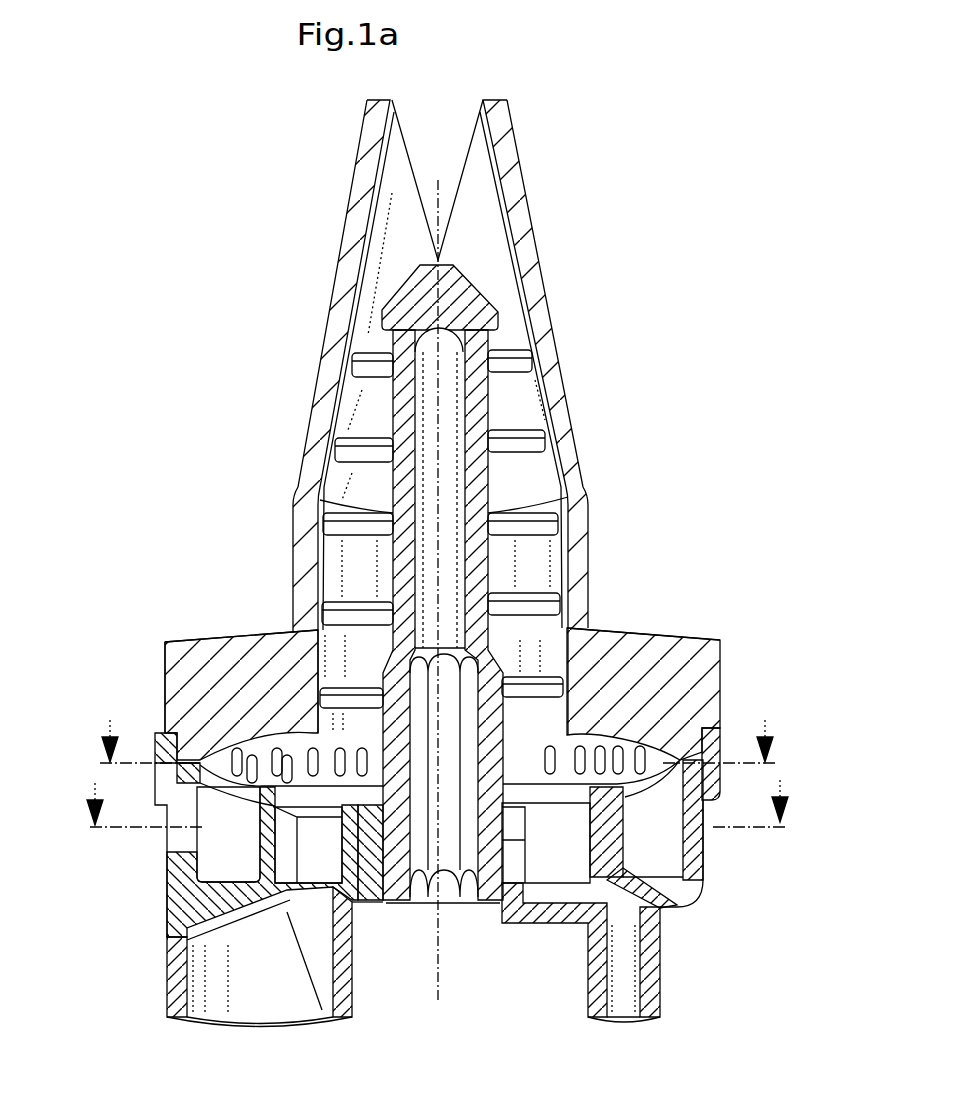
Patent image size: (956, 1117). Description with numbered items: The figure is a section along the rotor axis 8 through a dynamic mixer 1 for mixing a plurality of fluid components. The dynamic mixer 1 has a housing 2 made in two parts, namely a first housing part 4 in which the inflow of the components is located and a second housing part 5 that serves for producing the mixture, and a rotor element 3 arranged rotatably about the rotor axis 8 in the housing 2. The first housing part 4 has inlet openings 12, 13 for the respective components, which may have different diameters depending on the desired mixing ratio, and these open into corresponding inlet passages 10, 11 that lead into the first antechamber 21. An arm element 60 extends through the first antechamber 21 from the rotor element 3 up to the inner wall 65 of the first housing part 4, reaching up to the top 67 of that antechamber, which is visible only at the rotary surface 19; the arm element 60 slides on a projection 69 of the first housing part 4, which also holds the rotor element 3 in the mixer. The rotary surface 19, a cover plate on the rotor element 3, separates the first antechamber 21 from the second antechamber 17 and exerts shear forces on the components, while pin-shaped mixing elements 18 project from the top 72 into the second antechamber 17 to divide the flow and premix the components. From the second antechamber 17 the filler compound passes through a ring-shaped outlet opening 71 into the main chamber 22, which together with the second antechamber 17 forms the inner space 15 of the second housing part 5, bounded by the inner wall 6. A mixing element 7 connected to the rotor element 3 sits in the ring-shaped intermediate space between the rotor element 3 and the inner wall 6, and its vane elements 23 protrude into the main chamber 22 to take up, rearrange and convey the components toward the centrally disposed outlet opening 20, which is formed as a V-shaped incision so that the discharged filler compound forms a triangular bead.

The dynamic mixer 1 is at (439, 559).
The housing 2 is at (591, 543).
The rotor element 3 is at (488, 277).
The first housing part 4 is at (190, 902).
The second housing part 5 is at (190, 695).
The inner wall 6 is at (527, 480).
The mixing element 7 is at (500, 562).
The rotor axis 8 is at (441, 975).
The inlet passage 10 is at (245, 968).
The inlet passage 11 is at (628, 940).
The inlet opening 12 is at (257, 1020).
The inlet opening 13 is at (620, 1013).
The inner space 15 is at (313, 630).
The second antechamber 17 is at (205, 750).
The mixing elements 18 is at (660, 750).
The rotary surface 19 is at (287, 795).
The outlet opening 20 is at (440, 257).
The first antechamber 21 is at (307, 865).
The main chamber 22 is at (357, 572).
The vane elements 23 is at (323, 356).
The arm element 60 is at (357, 905).
The inner wall 65 is at (283, 910).
The top 67 is at (522, 922).
The projection 69 is at (352, 883).
The outlet opening 71 is at (560, 700).
The top 72 is at (650, 700).